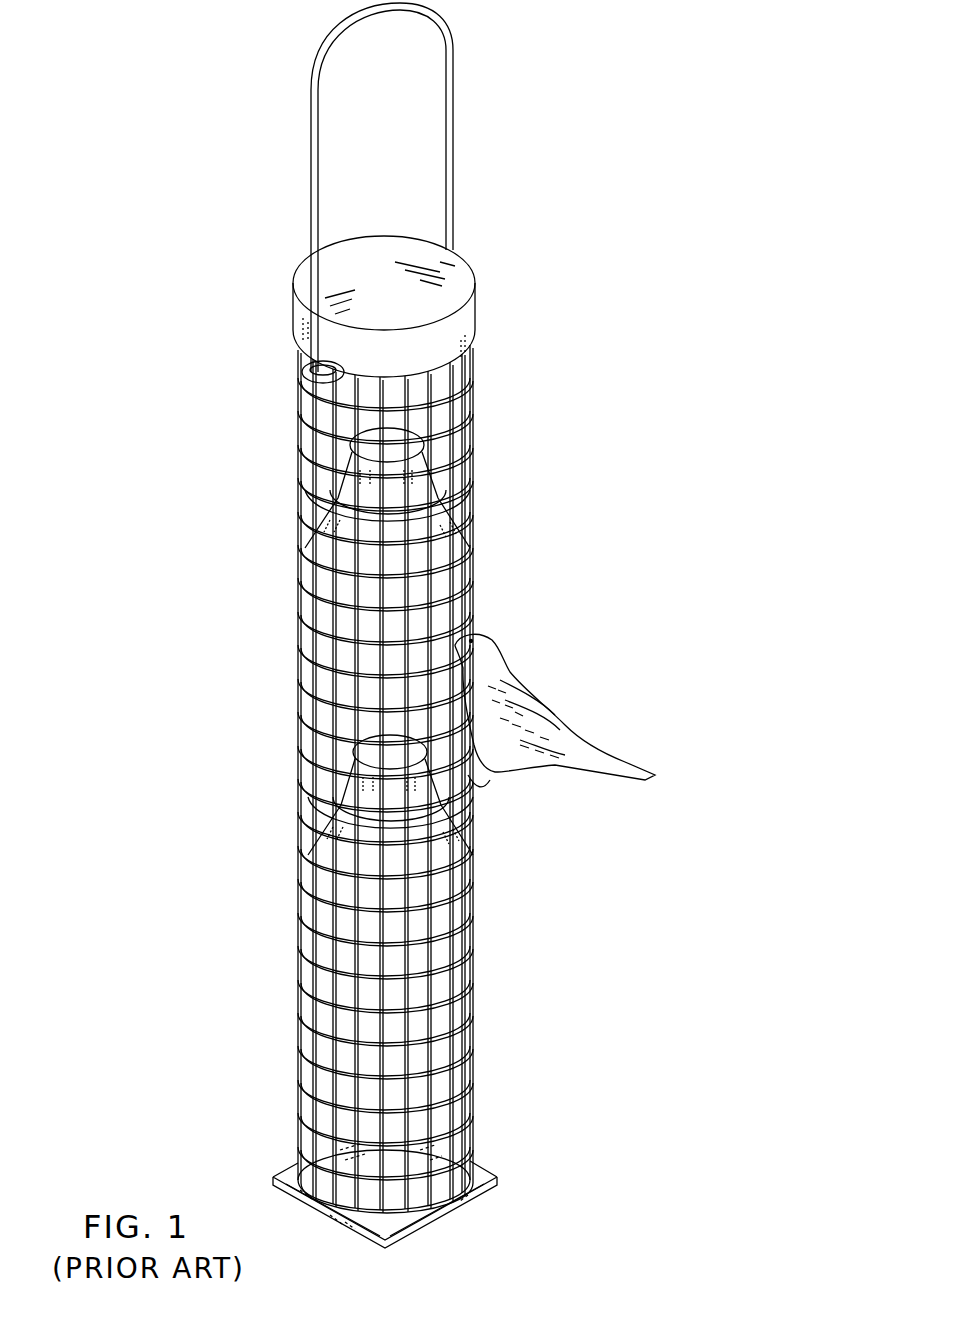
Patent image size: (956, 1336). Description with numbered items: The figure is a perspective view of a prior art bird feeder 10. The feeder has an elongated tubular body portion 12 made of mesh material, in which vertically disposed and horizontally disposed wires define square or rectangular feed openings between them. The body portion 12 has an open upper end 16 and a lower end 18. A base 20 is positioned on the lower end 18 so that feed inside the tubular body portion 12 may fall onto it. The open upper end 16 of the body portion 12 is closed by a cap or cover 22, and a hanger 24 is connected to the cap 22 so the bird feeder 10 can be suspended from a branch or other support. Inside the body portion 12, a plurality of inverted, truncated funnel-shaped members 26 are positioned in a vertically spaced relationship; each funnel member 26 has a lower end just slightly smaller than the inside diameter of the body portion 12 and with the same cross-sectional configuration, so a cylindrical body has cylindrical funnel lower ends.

The bird feeder 10 is at (250, 585).
The tubular body portion 12 is at (280, 912).
The open upper end 16 is at (452, 306).
The lower end 18 is at (467, 1181).
The base 20 is at (490, 1185).
The cap or cover 22 is at (386, 297).
The hanger 24 is at (455, 126).
The inverted, truncated funnel-shaped member 26 is at (445, 552).